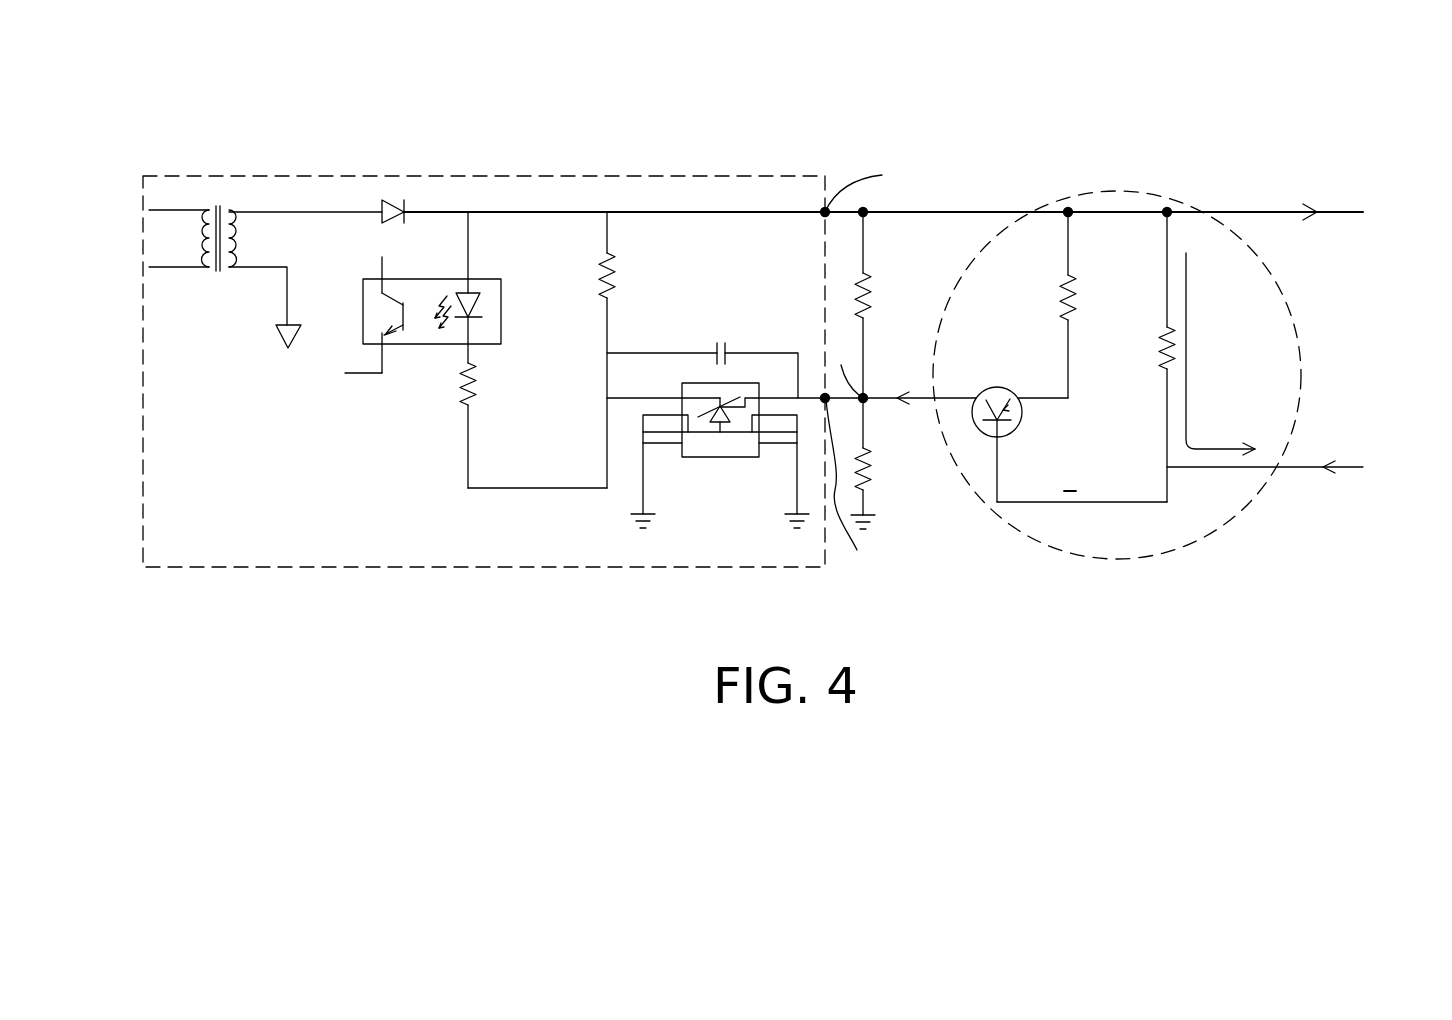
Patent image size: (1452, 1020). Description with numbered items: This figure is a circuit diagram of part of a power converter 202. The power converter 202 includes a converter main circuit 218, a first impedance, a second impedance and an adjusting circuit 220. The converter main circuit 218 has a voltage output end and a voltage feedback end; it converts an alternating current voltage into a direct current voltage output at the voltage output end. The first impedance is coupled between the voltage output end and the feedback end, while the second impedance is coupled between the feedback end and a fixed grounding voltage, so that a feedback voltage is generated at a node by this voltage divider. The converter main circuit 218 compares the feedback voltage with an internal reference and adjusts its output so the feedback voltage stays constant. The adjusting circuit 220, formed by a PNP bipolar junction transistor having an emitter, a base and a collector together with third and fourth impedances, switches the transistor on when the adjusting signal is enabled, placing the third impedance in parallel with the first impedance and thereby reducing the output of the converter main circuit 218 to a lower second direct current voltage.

The power converter 202 is at (1430, 92).
The converter main circuit 218 is at (484, 176).
The adjusting circuit 220 is at (1117, 189).